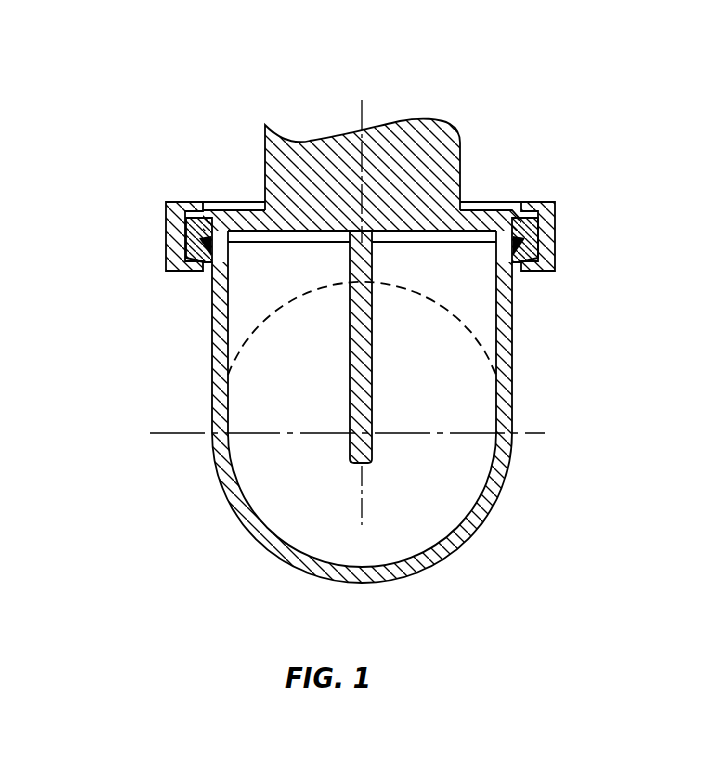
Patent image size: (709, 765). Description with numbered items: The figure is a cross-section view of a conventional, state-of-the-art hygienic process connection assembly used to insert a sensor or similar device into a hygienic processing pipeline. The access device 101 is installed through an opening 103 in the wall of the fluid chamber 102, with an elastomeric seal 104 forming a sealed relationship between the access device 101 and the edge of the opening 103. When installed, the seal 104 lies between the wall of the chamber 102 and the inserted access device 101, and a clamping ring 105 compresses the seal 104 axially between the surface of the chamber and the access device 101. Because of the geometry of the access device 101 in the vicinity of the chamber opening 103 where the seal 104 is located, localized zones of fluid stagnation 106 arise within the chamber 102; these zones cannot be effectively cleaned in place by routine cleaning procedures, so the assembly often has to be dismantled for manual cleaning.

The access device 101 is at (423, 146).
The fluid chamber 102 is at (263, 552).
The opening 103 is at (512, 274).
The elastomeric seal 104 is at (186, 210).
The clamping ring 105 is at (556, 225).
The zones of fluid stagnation 106 is at (448, 273).